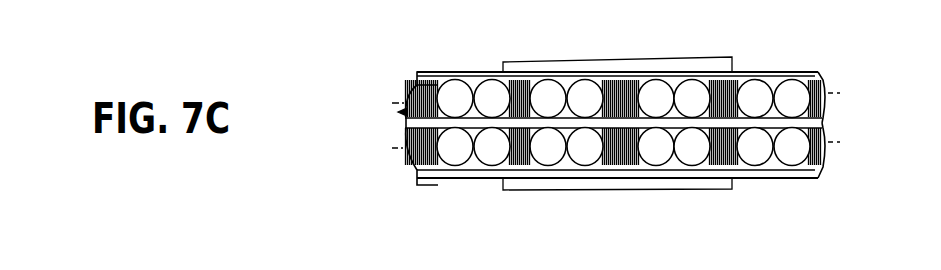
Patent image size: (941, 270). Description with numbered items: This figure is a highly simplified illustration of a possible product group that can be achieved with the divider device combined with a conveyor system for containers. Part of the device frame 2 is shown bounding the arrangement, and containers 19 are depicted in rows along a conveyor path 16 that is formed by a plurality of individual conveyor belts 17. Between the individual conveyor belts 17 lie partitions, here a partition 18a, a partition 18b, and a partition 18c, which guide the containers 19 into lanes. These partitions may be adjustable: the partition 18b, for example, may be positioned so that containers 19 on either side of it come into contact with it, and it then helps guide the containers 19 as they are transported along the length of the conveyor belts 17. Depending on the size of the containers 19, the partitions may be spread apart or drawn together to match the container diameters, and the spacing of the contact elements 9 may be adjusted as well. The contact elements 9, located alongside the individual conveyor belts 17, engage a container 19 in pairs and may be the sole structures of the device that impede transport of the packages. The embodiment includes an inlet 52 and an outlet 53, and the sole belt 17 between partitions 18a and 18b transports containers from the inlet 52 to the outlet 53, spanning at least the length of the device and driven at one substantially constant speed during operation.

The device frame 2 is at (620, 65).
The contact elements 9 is at (505, 88).
The conveyor path 16 is at (824, 158).
The conveyor belts 17 is at (823, 80).
The partition 18a is at (435, 82).
The partition 18b is at (413, 127).
The partition 18c is at (437, 178).
The containers 19 is at (546, 152).
The inlet 52 is at (456, 66).
The outlet 53 is at (789, 183).